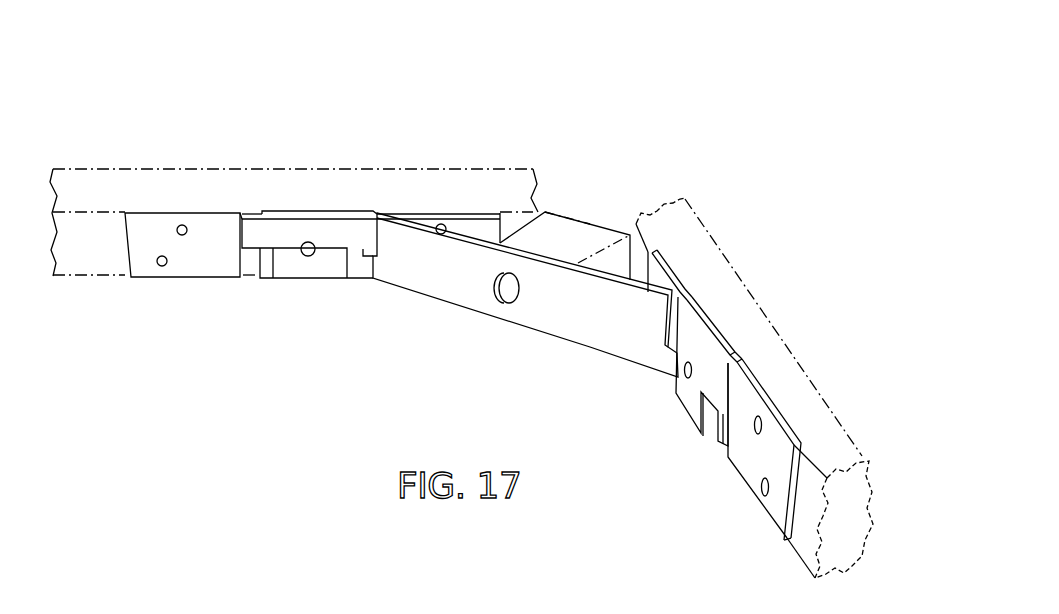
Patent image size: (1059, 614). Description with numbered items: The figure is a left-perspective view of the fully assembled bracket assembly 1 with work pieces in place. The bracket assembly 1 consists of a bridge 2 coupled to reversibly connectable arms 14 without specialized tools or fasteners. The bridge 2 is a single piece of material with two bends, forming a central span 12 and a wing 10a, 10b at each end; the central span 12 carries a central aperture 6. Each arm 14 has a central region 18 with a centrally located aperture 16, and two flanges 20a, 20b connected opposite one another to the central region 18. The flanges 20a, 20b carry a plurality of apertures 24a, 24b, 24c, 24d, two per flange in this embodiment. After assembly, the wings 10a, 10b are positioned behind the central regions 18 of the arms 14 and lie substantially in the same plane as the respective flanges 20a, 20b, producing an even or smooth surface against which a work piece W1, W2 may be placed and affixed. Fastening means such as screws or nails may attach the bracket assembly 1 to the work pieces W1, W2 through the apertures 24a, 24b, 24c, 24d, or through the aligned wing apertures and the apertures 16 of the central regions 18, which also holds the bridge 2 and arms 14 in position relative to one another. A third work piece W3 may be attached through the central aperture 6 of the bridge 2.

The bracket assembly 1 is at (695, 84).
The bridge 2 is at (525, 303).
The central aperture 6 is at (496, 290).
The central span 12 is at (525, 303).
The arm 14 is at (551, 320).
The aperture 16 is at (310, 253).
The central region 18 is at (290, 277).
The flange 20a is at (465, 222).
The flange 20b is at (132, 245).
The aperture 24a is at (760, 490).
The aperture 24b is at (762, 422).
The aperture 24c is at (182, 224).
The aperture 24d is at (161, 263).
The wing 10a is at (710, 320).
The wing 10b is at (312, 210).
The work piece W1 is at (384, 165).
The work piece W2 is at (702, 200).
The work piece W3 is at (592, 227).